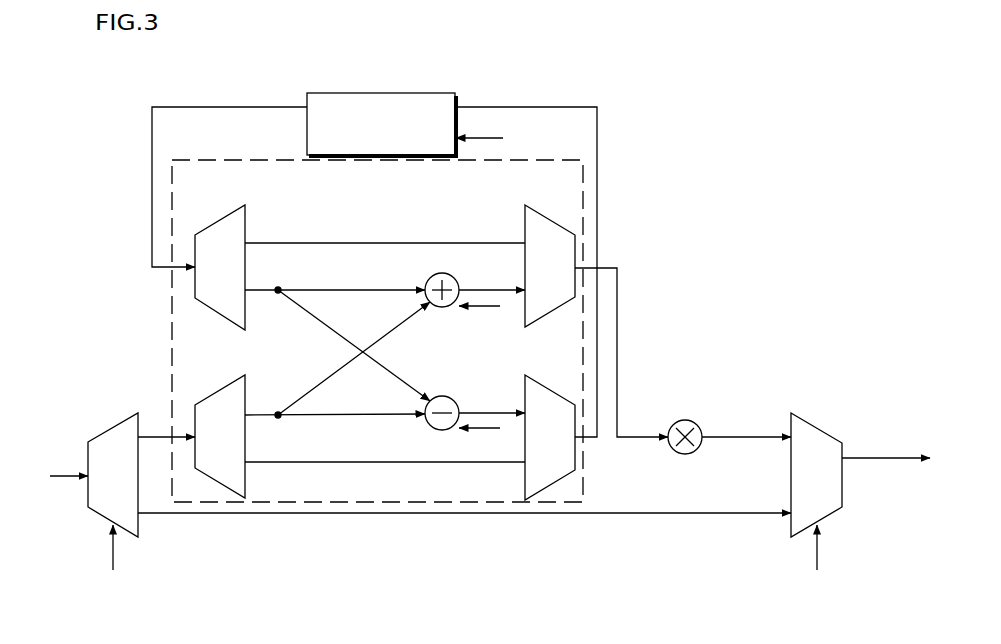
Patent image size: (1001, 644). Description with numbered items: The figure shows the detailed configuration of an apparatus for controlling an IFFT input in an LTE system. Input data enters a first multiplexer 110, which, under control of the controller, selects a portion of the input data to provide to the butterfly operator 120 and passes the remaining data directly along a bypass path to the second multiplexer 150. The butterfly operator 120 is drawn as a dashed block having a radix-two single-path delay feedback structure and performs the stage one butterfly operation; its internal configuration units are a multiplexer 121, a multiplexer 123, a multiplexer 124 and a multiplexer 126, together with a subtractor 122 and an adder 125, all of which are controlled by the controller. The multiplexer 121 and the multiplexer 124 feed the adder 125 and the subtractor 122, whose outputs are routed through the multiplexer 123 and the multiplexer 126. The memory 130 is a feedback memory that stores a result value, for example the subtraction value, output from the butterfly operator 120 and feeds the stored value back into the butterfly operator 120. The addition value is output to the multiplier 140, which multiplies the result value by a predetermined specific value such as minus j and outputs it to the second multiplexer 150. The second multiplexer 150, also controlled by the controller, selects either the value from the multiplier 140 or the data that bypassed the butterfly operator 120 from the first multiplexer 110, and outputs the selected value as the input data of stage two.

The first multiplexer 110 is at (113, 428).
The butterfly operator 120 is at (385, 503).
The multiplexer 121 is at (220, 389).
The subtractor 122 is at (454, 401).
The multiplexer 123 is at (552, 391).
The multiplexer 124 is at (220, 219).
The adder 125 is at (454, 279).
The multiplexer 126 is at (552, 221).
The memory 130 is at (436, 93).
The multiplier 140 is at (685, 420).
The second multiplexer 150 is at (815, 422).